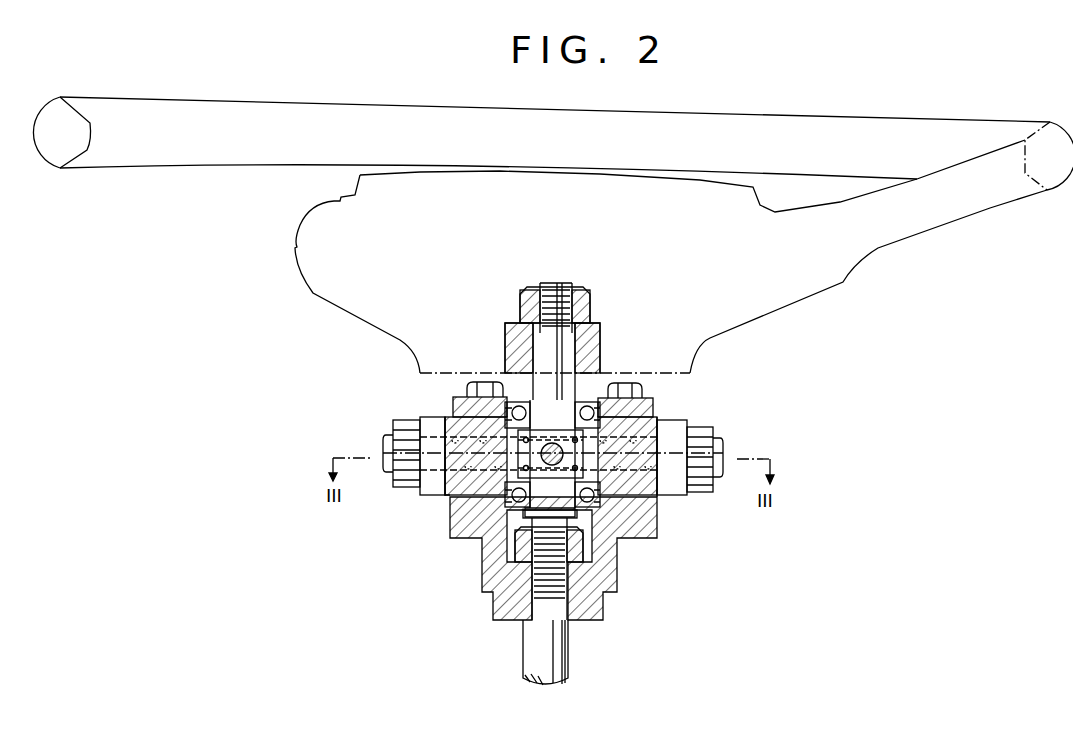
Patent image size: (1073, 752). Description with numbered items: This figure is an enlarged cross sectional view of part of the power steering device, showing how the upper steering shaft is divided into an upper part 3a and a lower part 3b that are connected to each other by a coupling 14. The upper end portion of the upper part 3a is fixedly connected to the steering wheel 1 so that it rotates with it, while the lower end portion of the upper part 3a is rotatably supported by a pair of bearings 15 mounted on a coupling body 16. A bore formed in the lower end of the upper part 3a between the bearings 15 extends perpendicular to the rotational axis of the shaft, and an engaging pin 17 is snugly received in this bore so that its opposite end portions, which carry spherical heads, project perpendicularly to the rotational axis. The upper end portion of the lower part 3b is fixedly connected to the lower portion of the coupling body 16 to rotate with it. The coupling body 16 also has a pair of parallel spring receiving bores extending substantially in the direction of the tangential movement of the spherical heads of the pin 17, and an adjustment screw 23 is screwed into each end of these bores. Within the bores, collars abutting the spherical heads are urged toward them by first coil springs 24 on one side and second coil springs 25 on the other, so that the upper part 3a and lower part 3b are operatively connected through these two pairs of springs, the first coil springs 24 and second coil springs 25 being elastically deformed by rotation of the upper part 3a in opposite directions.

The steering wheel 1 is at (843, 282).
The upper part of the upper steering shaft 3a is at (600, 353).
The lower part of the upper steering shaft 3b is at (558, 678).
The coupling 14 is at (440, 540).
The bearings 15 is at (653, 412).
The coupling body 16 is at (448, 520).
The engaging pin 17 is at (453, 400).
The adjustment screw 23 is at (383, 442).
The first coil springs 24 is at (447, 498).
The second coil springs 25 is at (660, 502).